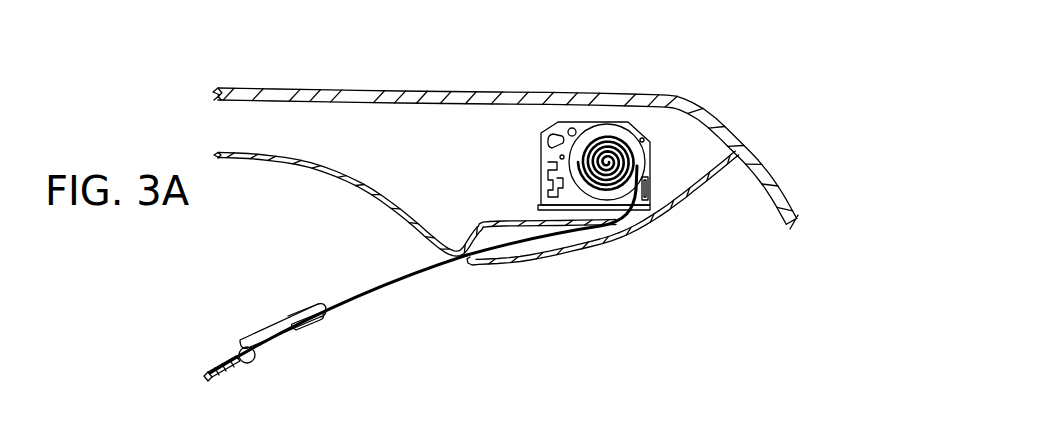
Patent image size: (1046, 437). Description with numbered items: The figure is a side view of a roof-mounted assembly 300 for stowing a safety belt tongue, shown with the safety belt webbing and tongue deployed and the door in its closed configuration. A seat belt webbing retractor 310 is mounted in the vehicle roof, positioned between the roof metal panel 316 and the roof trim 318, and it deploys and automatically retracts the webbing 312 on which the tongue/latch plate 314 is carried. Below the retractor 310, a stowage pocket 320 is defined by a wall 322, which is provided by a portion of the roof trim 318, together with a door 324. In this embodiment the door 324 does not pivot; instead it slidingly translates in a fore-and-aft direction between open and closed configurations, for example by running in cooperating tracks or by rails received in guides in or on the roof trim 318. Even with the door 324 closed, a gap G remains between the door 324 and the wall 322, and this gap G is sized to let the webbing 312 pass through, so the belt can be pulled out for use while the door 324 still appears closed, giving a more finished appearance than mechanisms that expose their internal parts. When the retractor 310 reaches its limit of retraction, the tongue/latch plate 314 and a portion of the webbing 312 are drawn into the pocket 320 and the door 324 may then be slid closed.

The roof-mounted assembly 300 is at (735, 83).
The retractor 310 is at (591, 126).
The webbing 312 is at (346, 300).
The tongue/latch plate 314 is at (226, 346).
The roof metal panel 316 is at (382, 91).
The roof trim 318 is at (308, 160).
The pocket 320 is at (584, 265).
The wall 322 is at (492, 220).
The door 324 is at (521, 263).
The gap G is at (455, 263).